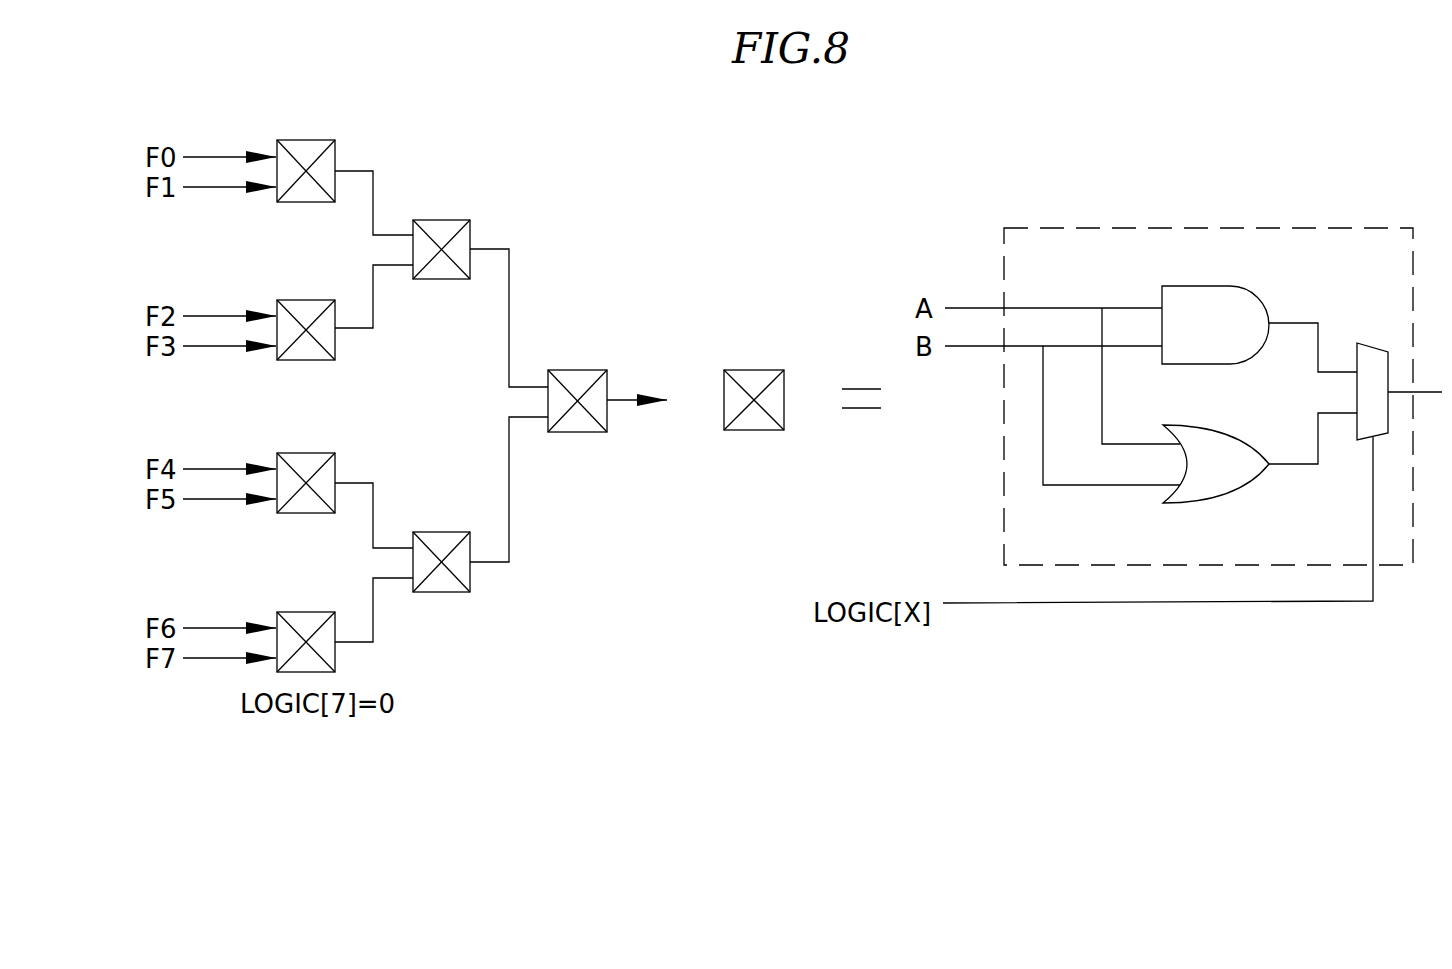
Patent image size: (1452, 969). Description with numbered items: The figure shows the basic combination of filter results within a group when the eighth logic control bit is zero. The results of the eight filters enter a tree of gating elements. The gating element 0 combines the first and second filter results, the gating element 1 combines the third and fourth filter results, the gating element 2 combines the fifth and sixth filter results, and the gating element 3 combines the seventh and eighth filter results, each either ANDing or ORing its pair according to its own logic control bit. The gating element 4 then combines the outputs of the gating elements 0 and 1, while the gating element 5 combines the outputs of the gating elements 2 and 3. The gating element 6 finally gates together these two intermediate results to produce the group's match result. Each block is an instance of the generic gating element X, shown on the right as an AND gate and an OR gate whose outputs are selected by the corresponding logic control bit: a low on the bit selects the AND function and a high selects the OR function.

The gating element controlled by logic bit 0 is at (345, 171).
The gating element controlled by logic bit 1 is at (345, 312).
The gating element controlled by logic bit 2 is at (345, 484).
The gating element controlled by logic bit 3 is at (345, 625).
The gating element controlled by logic bit 4 is at (480, 285).
The gating element controlled by logic bit 5 is at (480, 504).
The gating element controlled by logic bit 6 is at (607, 383).
The generic gating element X is at (754, 382).